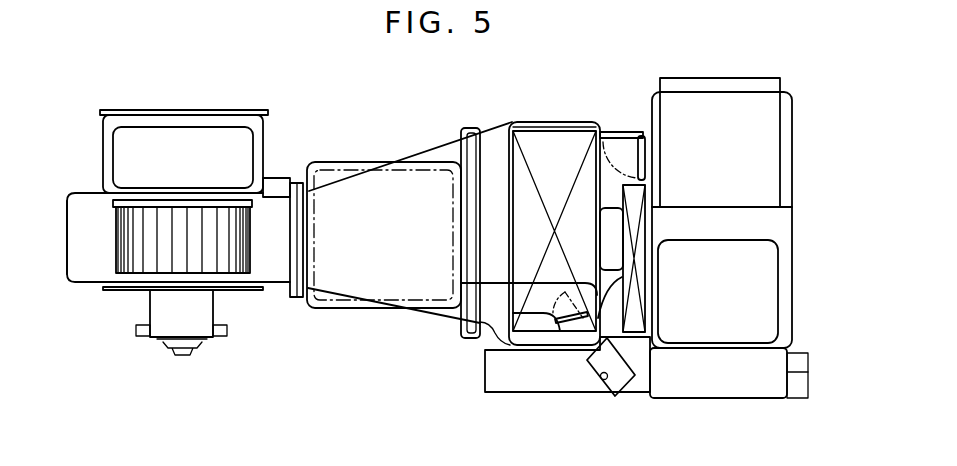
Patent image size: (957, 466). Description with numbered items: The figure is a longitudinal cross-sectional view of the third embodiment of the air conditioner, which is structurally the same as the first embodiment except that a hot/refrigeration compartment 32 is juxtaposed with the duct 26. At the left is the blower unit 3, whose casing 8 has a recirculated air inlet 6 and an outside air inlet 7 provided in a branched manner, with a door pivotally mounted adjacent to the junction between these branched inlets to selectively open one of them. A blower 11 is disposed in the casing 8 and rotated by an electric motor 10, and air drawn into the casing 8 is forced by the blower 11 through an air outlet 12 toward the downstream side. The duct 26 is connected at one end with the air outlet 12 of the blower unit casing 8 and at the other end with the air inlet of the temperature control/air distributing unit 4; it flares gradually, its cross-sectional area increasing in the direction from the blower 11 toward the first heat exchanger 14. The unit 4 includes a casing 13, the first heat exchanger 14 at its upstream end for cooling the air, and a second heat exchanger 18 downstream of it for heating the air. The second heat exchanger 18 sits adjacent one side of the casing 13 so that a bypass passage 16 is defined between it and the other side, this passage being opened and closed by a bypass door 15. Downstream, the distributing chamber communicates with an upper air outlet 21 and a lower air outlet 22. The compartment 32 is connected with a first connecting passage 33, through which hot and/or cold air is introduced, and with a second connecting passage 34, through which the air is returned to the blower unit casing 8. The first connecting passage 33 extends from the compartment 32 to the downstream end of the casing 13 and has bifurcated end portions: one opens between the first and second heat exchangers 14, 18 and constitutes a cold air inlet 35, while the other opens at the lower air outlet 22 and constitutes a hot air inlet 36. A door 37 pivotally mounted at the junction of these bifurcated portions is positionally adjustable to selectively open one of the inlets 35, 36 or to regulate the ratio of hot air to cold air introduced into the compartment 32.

The blower unit 3 is at (77, 190).
The temperature control/air distributing unit 4 is at (541, 118).
The recirculated air inlet 6 is at (116, 146).
The outside air inlet 7 is at (187, 110).
The casing 8 is at (65, 263).
The electric motor 10 is at (204, 326).
The blower 11 is at (146, 258).
The air outlet 12 is at (270, 268).
The casing 13 is at (485, 343).
The first heat exchanger 14 is at (563, 146).
The bypass door 15 is at (610, 132).
The bypass passage 16 is at (625, 150).
The second heat exchanger 18 is at (492, 150).
The upper air outlet 21 is at (778, 146).
The lower air outlet 22 is at (483, 378).
The duct 26 is at (433, 150).
The hot/refrigeration compartment 32 is at (348, 280).
The first connecting passage 33 is at (462, 322).
The second connecting passage 34 is at (280, 178).
The cold air inlet 35 is at (602, 252).
The hot air inlet 36 is at (604, 380).
The door 37 is at (568, 330).